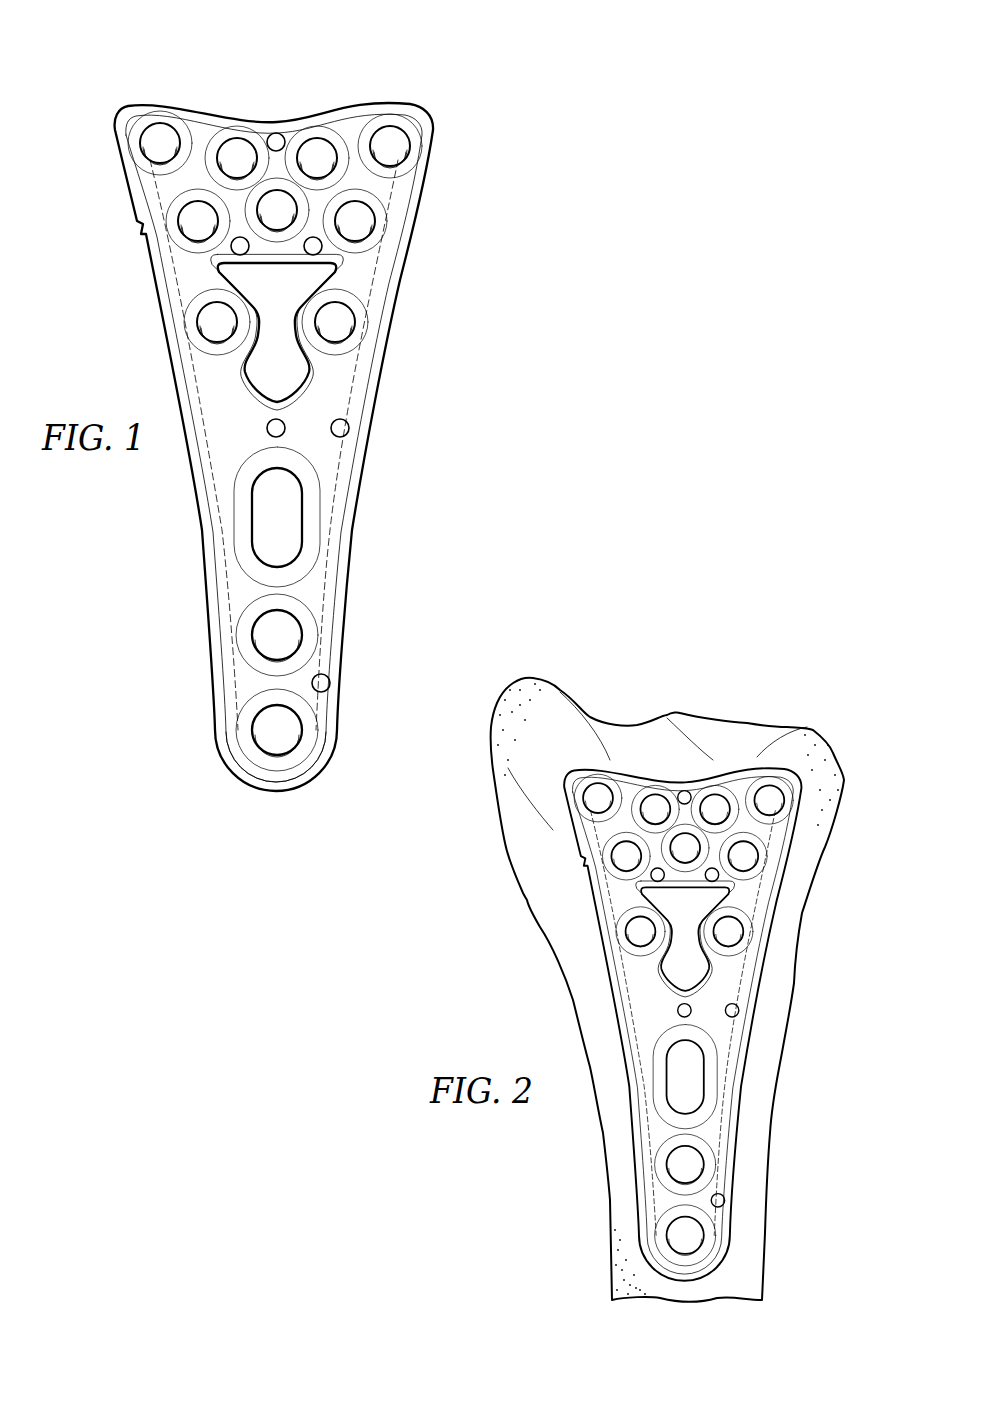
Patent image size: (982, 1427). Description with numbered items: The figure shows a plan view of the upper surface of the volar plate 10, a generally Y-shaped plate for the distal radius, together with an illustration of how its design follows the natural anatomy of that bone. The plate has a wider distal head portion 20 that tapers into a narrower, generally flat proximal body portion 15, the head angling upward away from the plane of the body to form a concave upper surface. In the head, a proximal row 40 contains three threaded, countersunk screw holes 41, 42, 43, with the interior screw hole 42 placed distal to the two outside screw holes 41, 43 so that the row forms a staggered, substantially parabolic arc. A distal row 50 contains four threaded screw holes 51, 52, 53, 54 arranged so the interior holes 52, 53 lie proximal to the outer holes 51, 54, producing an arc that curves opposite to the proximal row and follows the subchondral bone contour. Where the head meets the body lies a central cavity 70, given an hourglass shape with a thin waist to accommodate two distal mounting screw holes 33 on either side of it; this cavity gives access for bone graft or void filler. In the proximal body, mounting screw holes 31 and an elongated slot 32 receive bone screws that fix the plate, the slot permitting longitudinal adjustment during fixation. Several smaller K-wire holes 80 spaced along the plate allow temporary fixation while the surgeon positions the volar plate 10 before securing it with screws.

In FIG. 1, the volar plate 10 is at (266, 404).
In FIG. 2, the volar plate 10 is at (568, 942).
In FIG. 1, the proximal body portion 15 is at (355, 740).
In FIG. 1, the distal head portion 20 is at (299, 163).
In FIG. 1, the mounting screw holes 31 is at (262, 637).
In FIG. 1, the elongated slot 32 is at (272, 468).
In FIG. 1, the distal mounting screw holes 33 is at (209, 330).
In FIG. 1, the proximal row 40 is at (290, 243).
In FIG. 1, the outside screw hole 41 is at (187, 228).
In FIG. 1, the interior screw hole 42 is at (274, 224).
In FIG. 1, the outside screw hole 43 is at (372, 222).
In FIG. 1, the distal row 50 is at (318, 124).
In FIG. 1, the outer screw hole 51 is at (163, 128).
In FIG. 1, the interior screw hole 52 is at (238, 142).
In FIG. 1, the interior screw hole 53 is at (307, 148).
In FIG. 1, the outer screw hole 54 is at (388, 130).
In FIG. 1, the central cavity 70 is at (264, 394).
In FIG. 1, the K-wire holes 80 is at (276, 134).